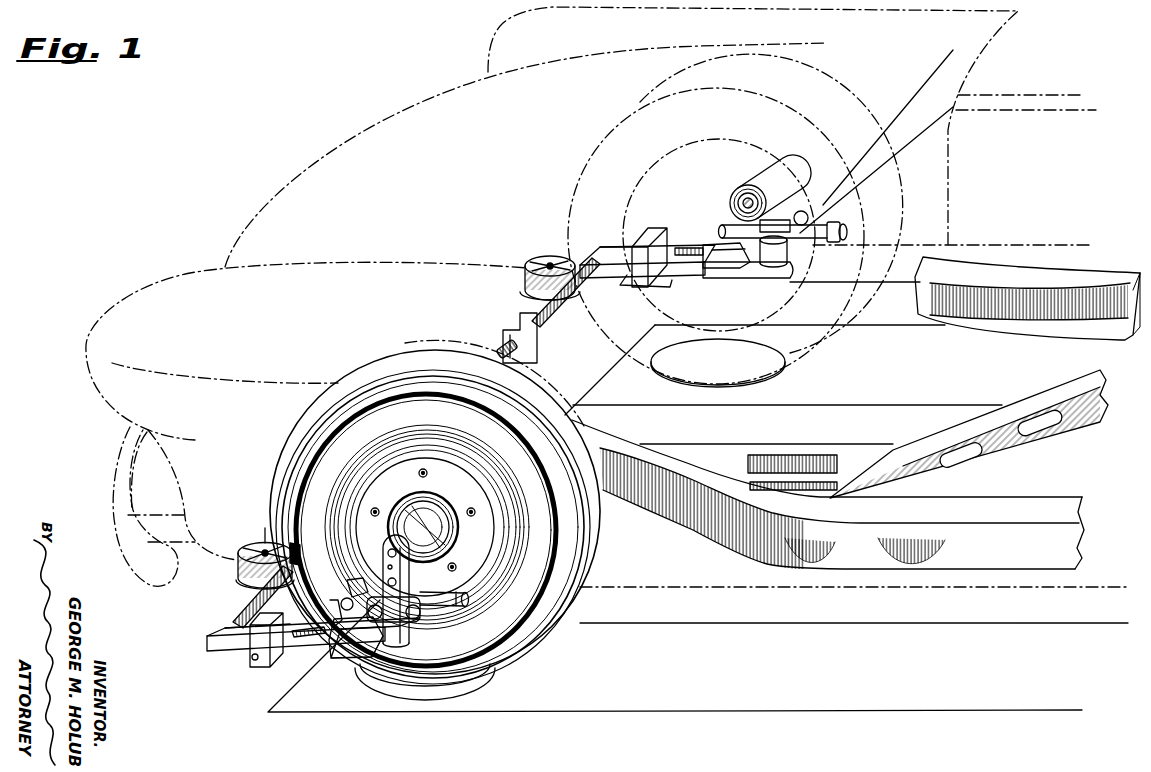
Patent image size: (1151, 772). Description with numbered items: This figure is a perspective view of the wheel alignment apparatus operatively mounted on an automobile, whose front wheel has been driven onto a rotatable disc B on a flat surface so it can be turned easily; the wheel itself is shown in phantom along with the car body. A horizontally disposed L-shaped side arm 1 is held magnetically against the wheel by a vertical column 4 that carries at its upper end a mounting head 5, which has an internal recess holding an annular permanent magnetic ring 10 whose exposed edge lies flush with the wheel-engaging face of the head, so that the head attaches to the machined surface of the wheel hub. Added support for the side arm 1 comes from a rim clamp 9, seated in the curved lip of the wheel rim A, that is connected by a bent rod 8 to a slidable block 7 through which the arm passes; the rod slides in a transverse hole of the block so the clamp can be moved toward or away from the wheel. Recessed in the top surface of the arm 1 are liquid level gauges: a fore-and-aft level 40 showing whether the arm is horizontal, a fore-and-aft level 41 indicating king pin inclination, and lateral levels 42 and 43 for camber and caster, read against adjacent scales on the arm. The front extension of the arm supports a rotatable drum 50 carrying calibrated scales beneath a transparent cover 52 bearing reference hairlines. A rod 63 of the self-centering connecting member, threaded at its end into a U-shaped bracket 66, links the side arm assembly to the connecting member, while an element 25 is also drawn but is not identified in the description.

The L-shaped side arm 1 is at (461, 448).
The vertical column 4 is at (577, 441).
The mounting head 5 is at (599, 358).
The slidable block 7 is at (458, 442).
The bent rod 8 is at (502, 450).
The rim clamp 9 is at (341, 578).
The annular permanent magnetic ring 10 is at (733, 203).
The adjusting rod 25 is at (655, 425).
The fore-and-aft level 40 is at (423, 413).
The fore-and-aft level 41 is at (487, 452).
The laterally disposed level 42 is at (547, 481).
The laterally disposed level 43 is at (539, 465).
The rotatable drum 50 is at (406, 412).
The transparent cover 52 is at (394, 415).
The rod 63 is at (494, 345).
The U-shaped bracket 66 is at (511, 334).
The wheel rim A is at (435, 517).
The rotatable disc B is at (580, 519).